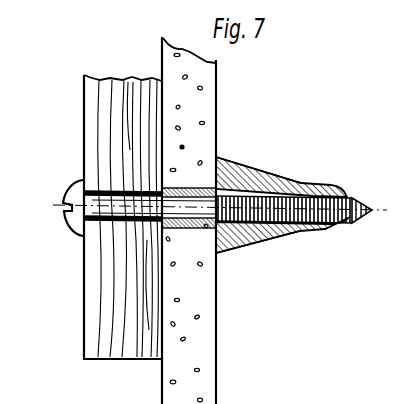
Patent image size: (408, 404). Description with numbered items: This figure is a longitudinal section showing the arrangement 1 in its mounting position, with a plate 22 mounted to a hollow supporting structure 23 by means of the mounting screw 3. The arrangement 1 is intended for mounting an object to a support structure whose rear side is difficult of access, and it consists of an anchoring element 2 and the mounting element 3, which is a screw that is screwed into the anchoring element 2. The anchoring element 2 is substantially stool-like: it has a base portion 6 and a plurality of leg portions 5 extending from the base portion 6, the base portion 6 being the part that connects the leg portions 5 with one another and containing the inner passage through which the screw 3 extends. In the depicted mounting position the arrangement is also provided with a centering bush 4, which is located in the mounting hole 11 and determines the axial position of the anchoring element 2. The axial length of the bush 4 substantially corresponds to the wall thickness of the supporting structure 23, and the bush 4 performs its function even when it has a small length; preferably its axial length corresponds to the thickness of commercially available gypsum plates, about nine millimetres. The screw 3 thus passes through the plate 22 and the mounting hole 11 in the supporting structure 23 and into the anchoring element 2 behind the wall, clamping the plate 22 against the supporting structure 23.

The arrangement 1 is at (206, 203).
The anchoring element 2 is at (209, 234).
The mounting element 3 is at (334, 187).
The centering bush 4 is at (182, 234).
The leg portions 5 is at (221, 167).
The base portion 6 is at (331, 236).
The mounting hole 11 is at (146, 234).
The plate 22 is at (115, 332).
The hollow supporting structure 23 is at (218, 312).